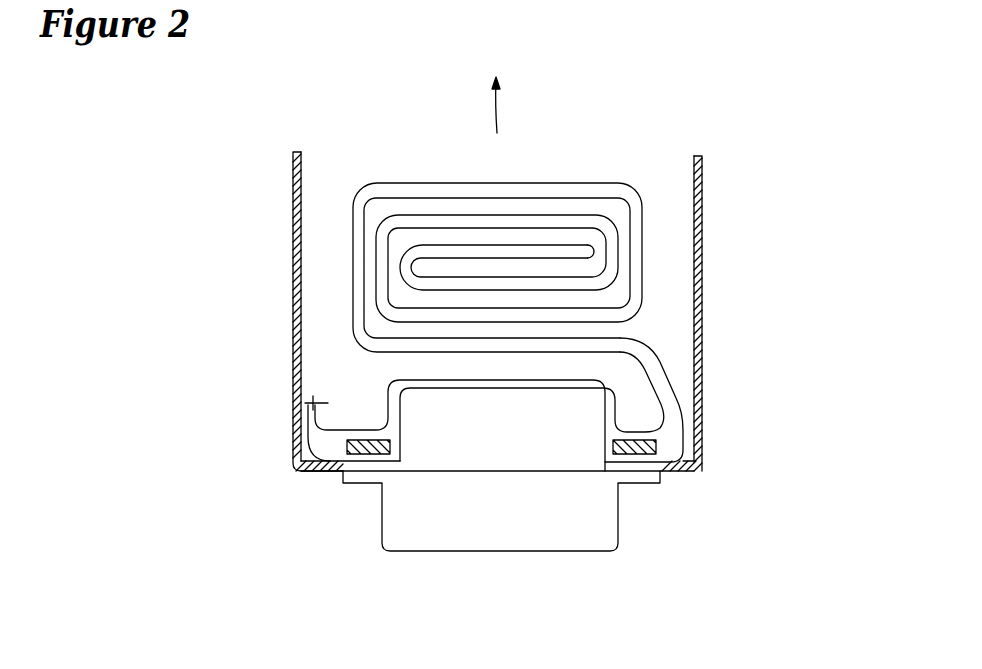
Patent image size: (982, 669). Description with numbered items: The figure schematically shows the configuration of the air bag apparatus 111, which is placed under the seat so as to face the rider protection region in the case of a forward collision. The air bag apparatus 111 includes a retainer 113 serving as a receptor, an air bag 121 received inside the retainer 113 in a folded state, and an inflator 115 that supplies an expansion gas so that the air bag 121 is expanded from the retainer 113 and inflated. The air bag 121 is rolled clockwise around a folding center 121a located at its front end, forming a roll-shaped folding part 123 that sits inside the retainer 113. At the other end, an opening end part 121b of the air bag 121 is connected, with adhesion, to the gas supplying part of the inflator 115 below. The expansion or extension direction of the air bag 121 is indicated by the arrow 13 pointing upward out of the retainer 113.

The arrow 13 is at (507, 83).
The air bag apparatus 111 is at (568, 283).
The retainer 113 is at (703, 303).
The inflator 115 is at (497, 517).
The air bag 121 is at (425, 222).
The folding center 121a is at (592, 247).
The opening end part 121b is at (665, 372).
The roll-shaped folding part 123 is at (521, 259).